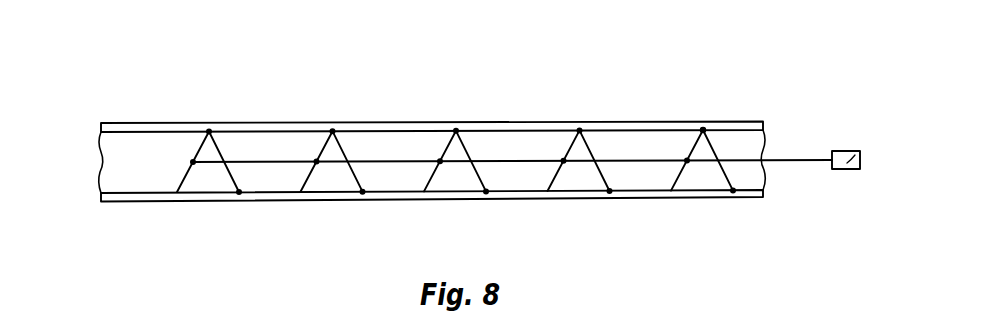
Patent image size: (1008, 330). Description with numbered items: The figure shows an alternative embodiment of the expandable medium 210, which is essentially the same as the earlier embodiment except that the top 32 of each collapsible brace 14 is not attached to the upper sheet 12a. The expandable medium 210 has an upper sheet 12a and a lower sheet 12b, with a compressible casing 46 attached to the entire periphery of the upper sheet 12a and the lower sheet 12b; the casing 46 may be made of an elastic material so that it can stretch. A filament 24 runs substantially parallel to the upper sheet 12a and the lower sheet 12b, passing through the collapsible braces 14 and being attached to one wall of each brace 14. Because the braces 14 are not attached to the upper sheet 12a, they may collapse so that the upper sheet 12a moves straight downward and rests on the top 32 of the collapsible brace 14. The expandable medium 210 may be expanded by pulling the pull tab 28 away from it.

The expandable medium 210 is at (210, 102).
The upper sheet 12a is at (101, 127).
The lower sheet 12b is at (101, 194).
The compressible casing 46 is at (95, 157).
The collapsible brace 14 is at (569, 147).
The top 32 is at (703, 128).
The filament 24 is at (778, 158).
The pull tab 28 is at (857, 150).